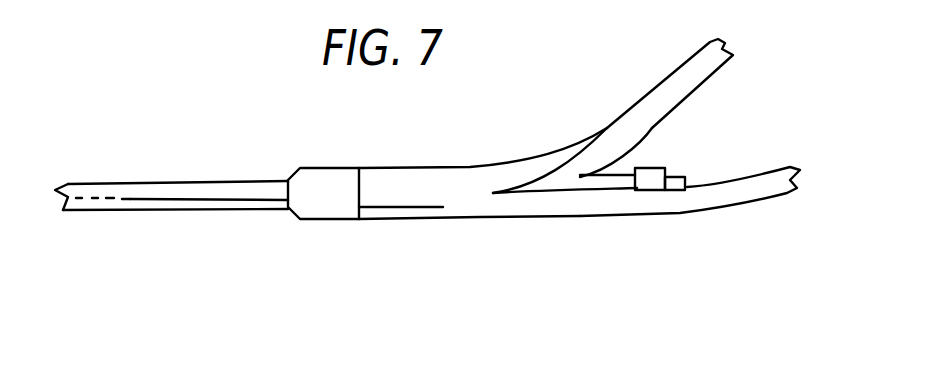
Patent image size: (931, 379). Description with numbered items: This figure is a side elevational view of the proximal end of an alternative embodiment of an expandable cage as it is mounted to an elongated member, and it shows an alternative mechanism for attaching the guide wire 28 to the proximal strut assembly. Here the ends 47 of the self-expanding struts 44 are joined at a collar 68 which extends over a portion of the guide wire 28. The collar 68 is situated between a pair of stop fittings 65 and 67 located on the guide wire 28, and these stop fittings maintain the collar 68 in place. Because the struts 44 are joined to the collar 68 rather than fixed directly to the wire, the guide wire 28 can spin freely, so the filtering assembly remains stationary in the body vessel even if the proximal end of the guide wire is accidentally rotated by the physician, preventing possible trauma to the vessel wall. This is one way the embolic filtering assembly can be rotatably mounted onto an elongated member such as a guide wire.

The guide wire 28 is at (190, 192).
The stop fitting 65 is at (315, 190).
The ends of the struts 47 is at (540, 153).
The self-expanding struts 44 is at (688, 85).
The stop fitting 67 is at (652, 182).
The collar 68 is at (410, 207).